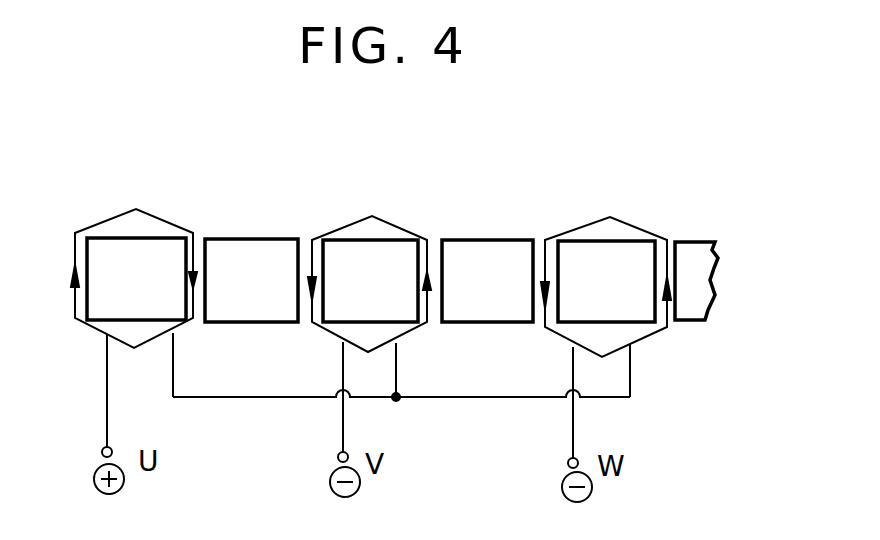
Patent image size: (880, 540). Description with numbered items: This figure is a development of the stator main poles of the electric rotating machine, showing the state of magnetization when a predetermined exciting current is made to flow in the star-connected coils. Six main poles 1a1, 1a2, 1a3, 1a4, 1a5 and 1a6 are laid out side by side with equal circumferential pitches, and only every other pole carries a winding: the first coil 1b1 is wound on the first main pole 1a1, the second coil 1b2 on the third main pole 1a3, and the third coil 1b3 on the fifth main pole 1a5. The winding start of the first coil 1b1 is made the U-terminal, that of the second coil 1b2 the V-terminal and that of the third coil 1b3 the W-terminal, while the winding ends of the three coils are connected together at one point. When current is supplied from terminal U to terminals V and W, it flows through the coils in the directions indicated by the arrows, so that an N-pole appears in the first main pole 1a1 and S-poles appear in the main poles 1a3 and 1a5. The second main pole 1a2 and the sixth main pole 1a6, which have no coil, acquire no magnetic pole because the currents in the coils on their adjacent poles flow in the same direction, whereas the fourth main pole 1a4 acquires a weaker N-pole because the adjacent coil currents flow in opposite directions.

The first stator main pole 1a1 is at (152, 247).
The second stator main pole 1a2 is at (262, 248).
The third stator main pole 1a3 is at (398, 250).
The fourth stator main pole 1a4 is at (507, 248).
The fifth stator main pole 1a5 is at (637, 250).
The sixth stator main pole 1a6 is at (700, 250).
The first coil 1b1 is at (100, 222).
The second coil 1b2 is at (348, 218).
The third coil 1b3 is at (588, 220).